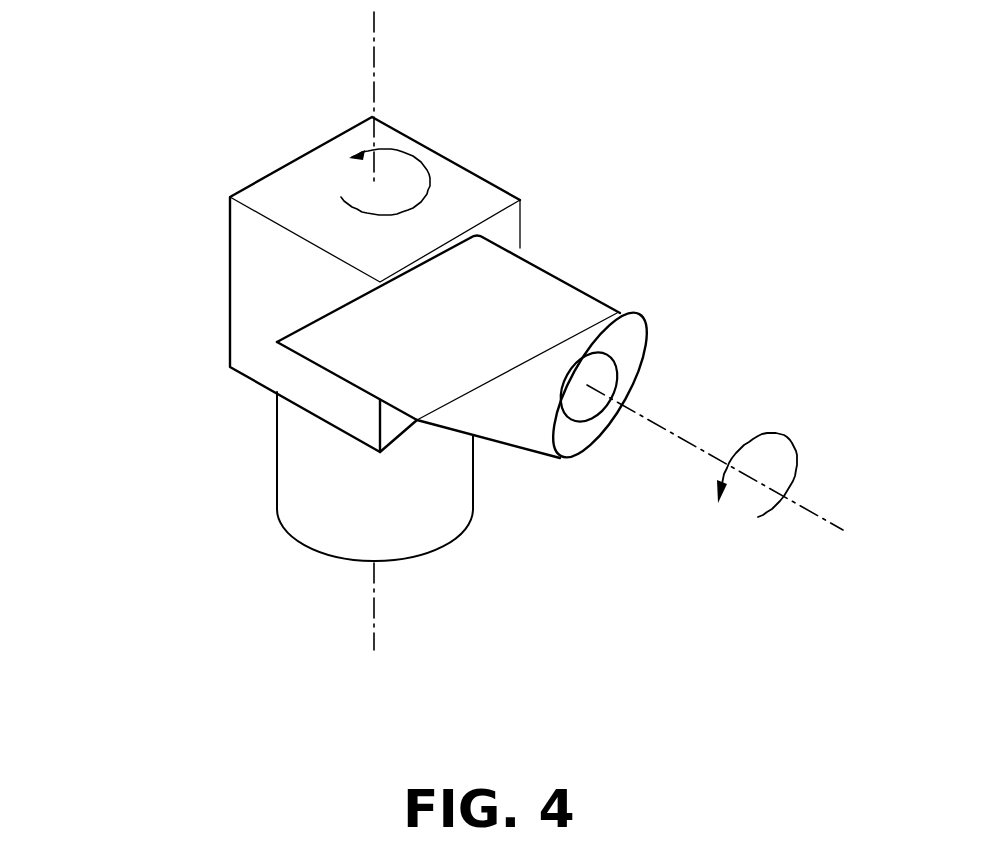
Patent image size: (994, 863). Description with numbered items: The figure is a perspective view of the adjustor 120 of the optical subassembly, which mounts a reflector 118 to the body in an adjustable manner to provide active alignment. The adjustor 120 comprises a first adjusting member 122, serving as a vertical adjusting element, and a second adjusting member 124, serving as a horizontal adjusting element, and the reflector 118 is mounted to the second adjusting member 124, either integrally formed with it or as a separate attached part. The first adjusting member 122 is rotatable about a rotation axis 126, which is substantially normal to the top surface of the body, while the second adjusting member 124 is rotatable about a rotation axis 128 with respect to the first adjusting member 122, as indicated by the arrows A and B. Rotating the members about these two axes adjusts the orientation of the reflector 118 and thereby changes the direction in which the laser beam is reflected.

The reflector 118 is at (515, 452).
The adjustor 120 is at (465, 331).
The first adjusting member 122 is at (222, 294).
The second adjusting member 124 is at (583, 273).
The rotation axis 126 is at (373, 607).
The rotation axis 128 is at (692, 440).